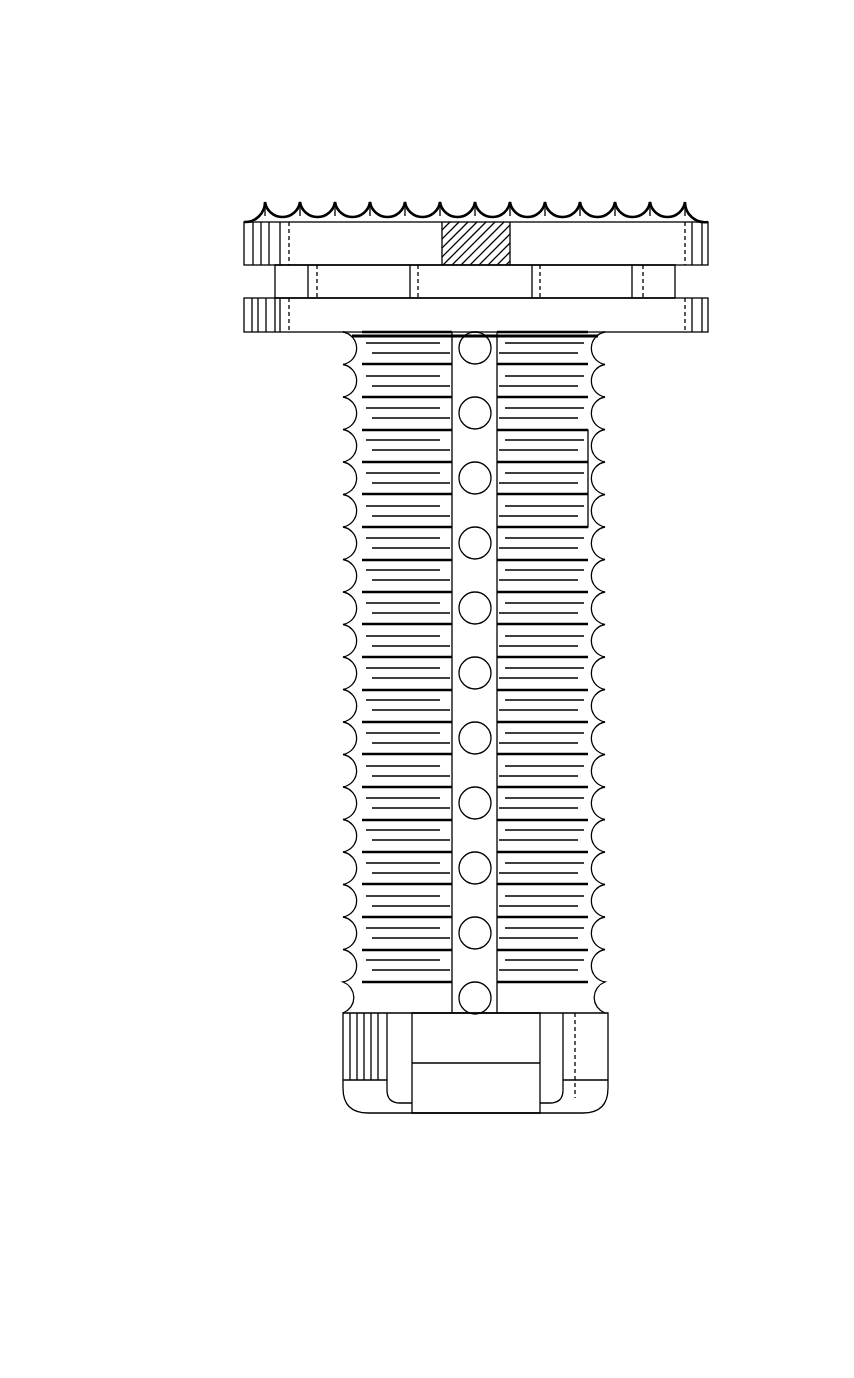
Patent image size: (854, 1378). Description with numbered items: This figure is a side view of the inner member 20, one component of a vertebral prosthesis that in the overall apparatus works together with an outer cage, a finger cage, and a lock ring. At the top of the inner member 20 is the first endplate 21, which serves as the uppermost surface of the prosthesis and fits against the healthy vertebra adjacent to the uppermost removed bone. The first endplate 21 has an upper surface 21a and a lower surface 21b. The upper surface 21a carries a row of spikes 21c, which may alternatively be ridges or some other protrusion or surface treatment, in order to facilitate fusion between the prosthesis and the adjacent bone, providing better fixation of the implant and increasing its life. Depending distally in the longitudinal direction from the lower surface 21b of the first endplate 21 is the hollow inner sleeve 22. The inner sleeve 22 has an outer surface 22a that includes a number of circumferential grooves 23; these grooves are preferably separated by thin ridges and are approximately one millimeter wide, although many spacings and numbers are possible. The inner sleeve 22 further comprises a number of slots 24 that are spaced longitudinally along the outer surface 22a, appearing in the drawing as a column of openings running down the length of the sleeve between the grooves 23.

The inner member 20 is at (140, 143).
The first endplate 21 is at (297, 243).
The upper surface 21a is at (630, 207).
The lower surface 21b is at (287, 333).
The spikes 21c is at (333, 203).
The hollow inner sleeve 22 is at (300, 705).
The outer surface 22a is at (593, 753).
The circumferential grooves 23 is at (592, 513).
The slots 24 is at (487, 838).